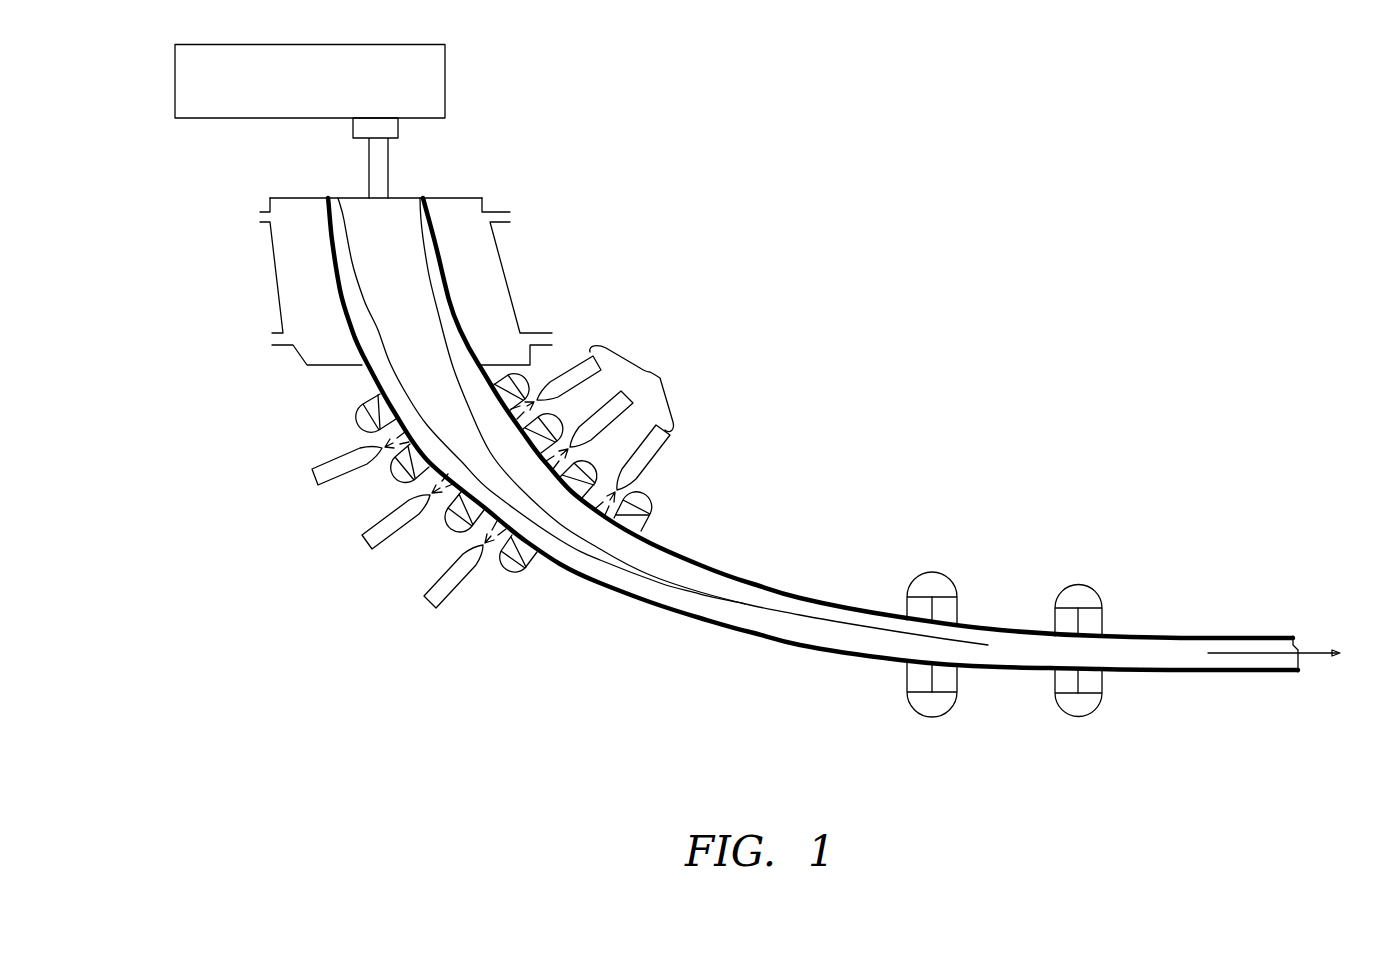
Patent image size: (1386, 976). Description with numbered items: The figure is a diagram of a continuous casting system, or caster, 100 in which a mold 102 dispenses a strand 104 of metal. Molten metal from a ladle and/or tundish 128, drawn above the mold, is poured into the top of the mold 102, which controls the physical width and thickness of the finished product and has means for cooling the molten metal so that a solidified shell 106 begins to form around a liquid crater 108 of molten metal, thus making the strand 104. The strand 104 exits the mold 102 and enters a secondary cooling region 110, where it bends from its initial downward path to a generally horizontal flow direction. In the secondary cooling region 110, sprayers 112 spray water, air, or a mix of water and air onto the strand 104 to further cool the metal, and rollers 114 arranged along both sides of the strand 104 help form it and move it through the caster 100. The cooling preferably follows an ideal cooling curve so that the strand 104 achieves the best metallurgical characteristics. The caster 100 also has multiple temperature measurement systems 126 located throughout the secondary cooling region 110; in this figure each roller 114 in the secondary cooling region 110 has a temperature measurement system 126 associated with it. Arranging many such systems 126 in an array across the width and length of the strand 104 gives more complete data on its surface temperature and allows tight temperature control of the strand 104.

The continuous casting system 100 is at (965, 190).
The mold 102 is at (270, 275).
The strand 104 is at (413, 195).
The solidified shell 106 is at (665, 572).
The liquid crater 108 is at (400, 285).
The secondary cooling region 110 is at (606, 429).
The sprayers 112 is at (307, 473).
The rollers 114 is at (360, 413).
The temperature measurement systems 126 is at (378, 392).
The ladle and/or tundish 128 is at (316, 84).